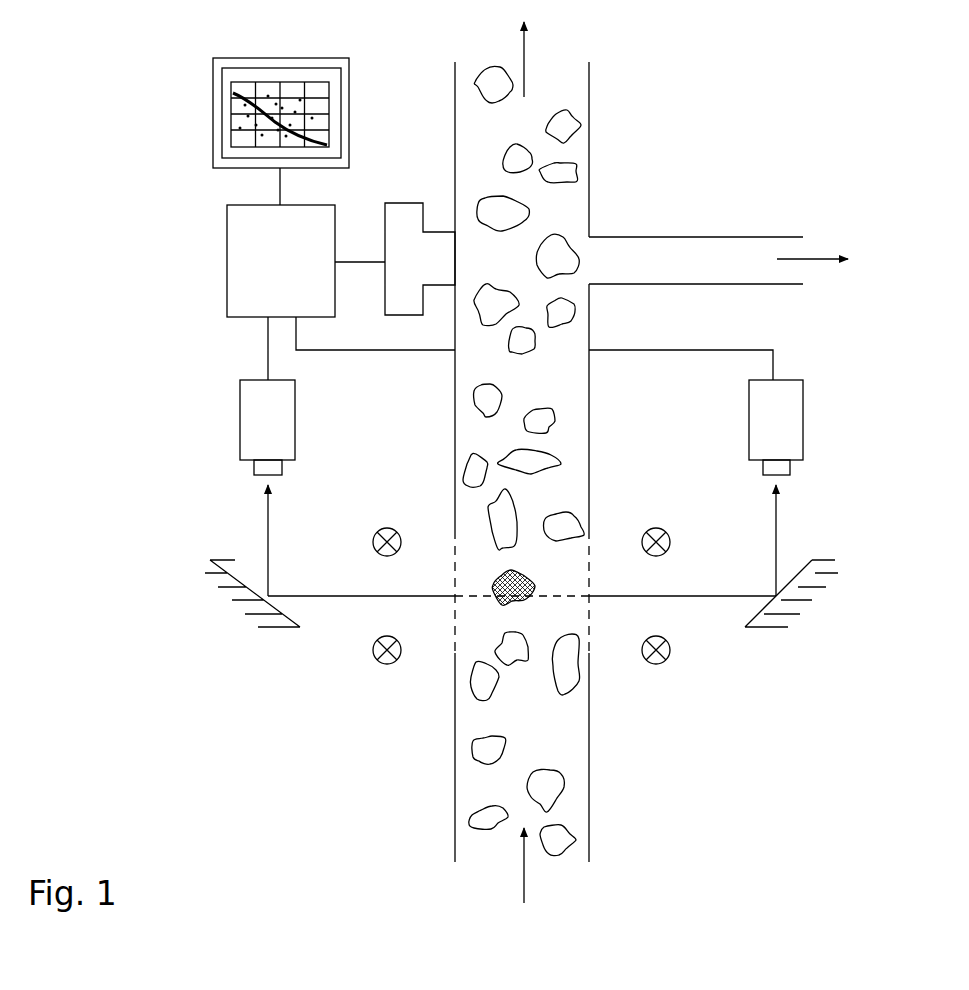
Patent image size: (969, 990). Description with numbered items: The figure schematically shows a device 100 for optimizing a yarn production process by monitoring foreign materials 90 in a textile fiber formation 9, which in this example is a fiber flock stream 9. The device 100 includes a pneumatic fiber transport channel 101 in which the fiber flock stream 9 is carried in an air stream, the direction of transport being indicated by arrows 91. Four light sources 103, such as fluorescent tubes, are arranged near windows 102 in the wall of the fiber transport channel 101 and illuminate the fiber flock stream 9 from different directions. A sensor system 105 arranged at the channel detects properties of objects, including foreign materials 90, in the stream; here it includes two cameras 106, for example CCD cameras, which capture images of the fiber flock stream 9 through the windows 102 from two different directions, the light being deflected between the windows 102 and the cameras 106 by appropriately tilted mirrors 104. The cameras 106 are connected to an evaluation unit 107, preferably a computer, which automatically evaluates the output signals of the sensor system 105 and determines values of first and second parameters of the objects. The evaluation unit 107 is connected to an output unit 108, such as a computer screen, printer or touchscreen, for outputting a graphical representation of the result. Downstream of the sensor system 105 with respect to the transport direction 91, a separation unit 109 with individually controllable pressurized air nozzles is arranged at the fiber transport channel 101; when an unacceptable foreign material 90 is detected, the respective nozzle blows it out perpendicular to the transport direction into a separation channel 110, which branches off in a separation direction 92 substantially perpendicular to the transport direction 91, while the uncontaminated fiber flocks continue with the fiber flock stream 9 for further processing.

The device 100 is at (776, 62).
The fiber flock stream 9 is at (546, 733).
The foreign material 90 is at (529, 584).
The arrows indicating transport direction 91 is at (526, 36).
The separation direction 92 is at (829, 260).
The pneumatic fiber transport channel 101 is at (454, 737).
The windows 102 is at (455, 614).
The light sources 103 is at (373, 545).
The mirrors 104 is at (233, 570).
The sensor system 105 is at (204, 396).
The cameras 106 is at (240, 425).
The evaluation unit 107 is at (227, 262).
The output unit 108 is at (213, 116).
The separation unit 109 is at (403, 203).
The separation channel 110 is at (697, 237).